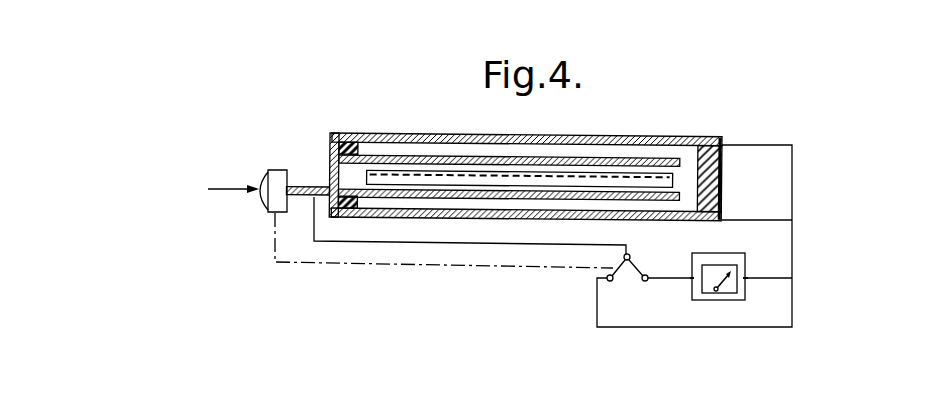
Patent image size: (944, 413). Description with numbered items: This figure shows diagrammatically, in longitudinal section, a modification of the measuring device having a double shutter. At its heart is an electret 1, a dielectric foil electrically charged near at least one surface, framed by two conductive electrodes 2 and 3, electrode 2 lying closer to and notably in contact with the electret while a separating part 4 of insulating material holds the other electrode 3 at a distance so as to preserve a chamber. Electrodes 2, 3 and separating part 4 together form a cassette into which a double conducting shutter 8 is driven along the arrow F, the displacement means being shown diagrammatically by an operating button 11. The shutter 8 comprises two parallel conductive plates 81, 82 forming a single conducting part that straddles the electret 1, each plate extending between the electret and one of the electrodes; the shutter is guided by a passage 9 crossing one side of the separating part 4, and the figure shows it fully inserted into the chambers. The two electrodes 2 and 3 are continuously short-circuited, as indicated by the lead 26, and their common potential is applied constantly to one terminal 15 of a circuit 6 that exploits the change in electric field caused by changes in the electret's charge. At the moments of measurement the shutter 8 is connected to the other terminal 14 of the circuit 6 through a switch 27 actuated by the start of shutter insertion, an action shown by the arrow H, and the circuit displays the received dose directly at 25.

The electret 1 is at (622, 182).
The conductive electrode 2 is at (528, 219).
The conductive electrode 3 is at (440, 136).
The separating part 4 is at (708, 161).
The circuit 6 is at (745, 254).
The shutter 8 is at (326, 161).
The passage 9 is at (340, 135).
The operating button 11 is at (272, 170).
The terminal 14 is at (690, 280).
The terminal 15 is at (750, 283).
The display 25 is at (725, 300).
The lead 26 is at (783, 218).
The switch 27 is at (635, 270).
The conductive plate 81 is at (443, 198).
The conductive plate 82 is at (404, 156).
The arrow F is at (233, 186).
The arrow H is at (625, 263).